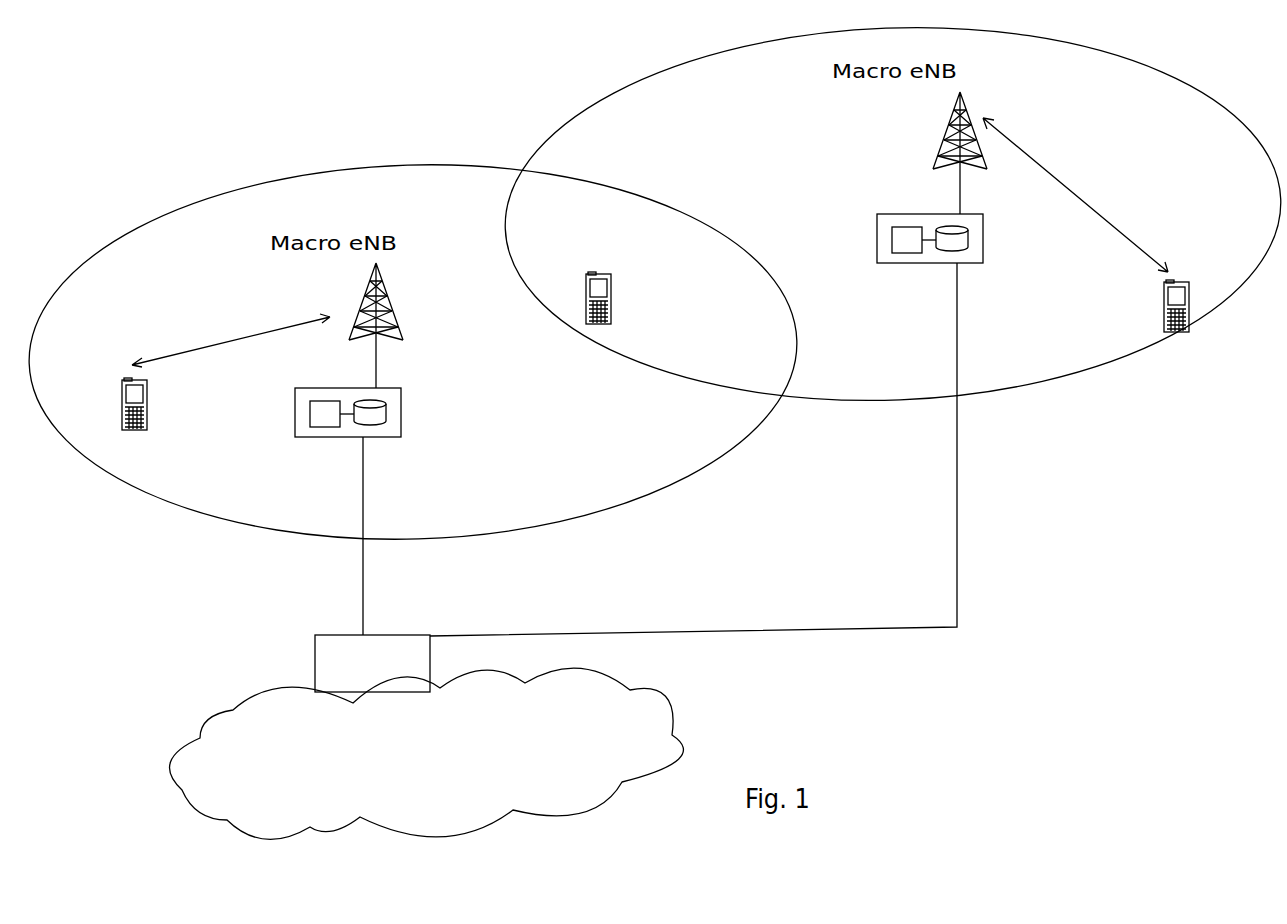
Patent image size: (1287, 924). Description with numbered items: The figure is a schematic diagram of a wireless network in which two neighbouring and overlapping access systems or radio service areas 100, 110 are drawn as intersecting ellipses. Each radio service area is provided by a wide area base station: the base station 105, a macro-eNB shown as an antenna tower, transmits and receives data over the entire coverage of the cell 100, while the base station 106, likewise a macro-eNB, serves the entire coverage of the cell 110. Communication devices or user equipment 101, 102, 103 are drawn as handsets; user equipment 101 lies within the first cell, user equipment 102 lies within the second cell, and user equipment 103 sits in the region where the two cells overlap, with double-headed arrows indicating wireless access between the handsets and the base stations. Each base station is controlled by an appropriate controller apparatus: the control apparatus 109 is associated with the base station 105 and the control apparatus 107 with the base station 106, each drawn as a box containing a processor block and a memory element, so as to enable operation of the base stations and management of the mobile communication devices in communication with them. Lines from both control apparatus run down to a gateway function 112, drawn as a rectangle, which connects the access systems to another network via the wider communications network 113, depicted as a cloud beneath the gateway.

The radio service area 100 is at (106, 187).
The radio service area 110 is at (569, 85).
The user equipment 101 is at (120, 432).
The user equipment 102 is at (1172, 332).
The user equipment 103 is at (583, 274).
The base station 105 is at (357, 306).
The base station 106 is at (938, 135).
The control apparatus 107 is at (877, 214).
The control apparatus 109 is at (295, 388).
The gateway function 112 is at (313, 655).
The wider communications network 113 is at (248, 720).